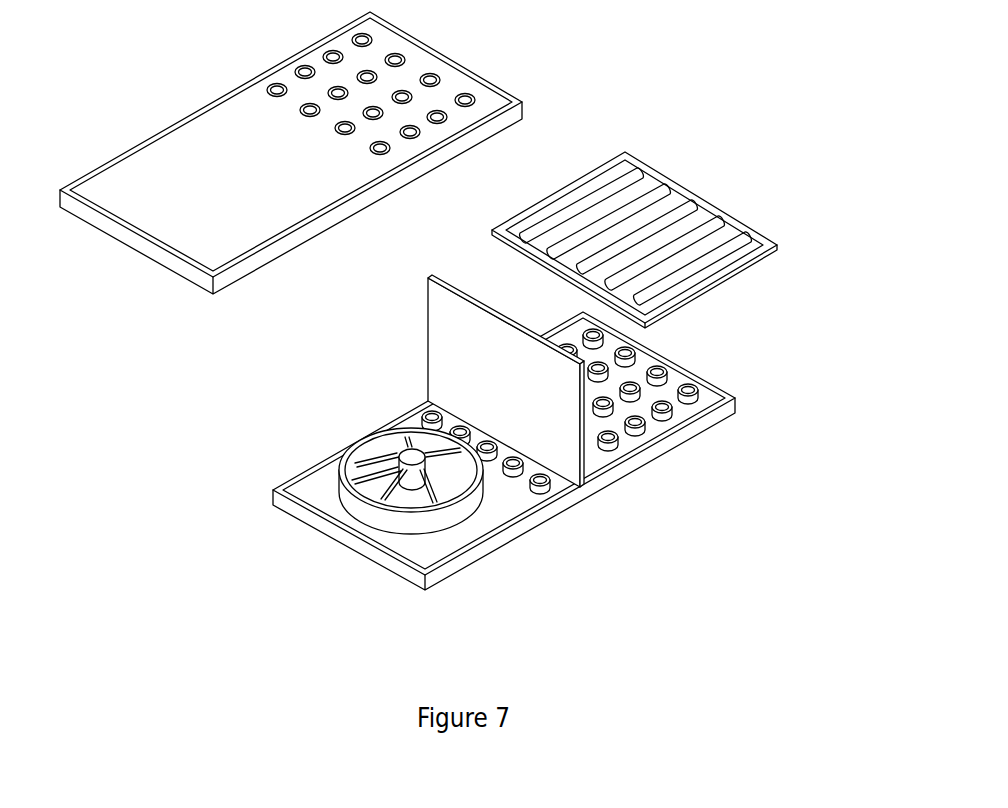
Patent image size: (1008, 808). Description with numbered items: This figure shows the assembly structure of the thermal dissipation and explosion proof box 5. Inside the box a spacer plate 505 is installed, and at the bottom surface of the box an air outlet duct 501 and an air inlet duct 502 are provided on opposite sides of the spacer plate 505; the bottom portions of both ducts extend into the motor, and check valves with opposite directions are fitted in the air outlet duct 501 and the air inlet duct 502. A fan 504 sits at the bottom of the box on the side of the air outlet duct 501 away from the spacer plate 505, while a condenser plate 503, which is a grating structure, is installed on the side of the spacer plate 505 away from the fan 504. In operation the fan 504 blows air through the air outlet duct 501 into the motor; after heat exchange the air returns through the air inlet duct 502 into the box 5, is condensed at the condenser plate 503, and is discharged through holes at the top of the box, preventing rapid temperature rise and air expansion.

The thermal dissipation and explosion proof box 5 is at (558, 461).
The air outlet duct 501 is at (515, 453).
The air inlet duct 502 is at (718, 400).
The condenser plate 503 is at (707, 262).
The fan 504 is at (450, 493).
The spacer plate 505 is at (562, 407).